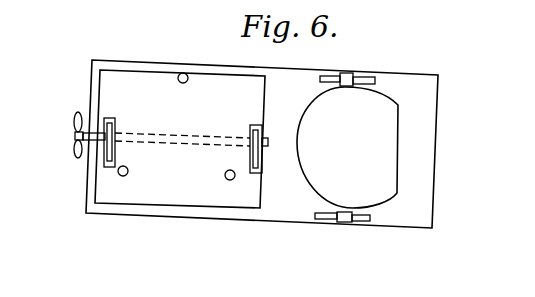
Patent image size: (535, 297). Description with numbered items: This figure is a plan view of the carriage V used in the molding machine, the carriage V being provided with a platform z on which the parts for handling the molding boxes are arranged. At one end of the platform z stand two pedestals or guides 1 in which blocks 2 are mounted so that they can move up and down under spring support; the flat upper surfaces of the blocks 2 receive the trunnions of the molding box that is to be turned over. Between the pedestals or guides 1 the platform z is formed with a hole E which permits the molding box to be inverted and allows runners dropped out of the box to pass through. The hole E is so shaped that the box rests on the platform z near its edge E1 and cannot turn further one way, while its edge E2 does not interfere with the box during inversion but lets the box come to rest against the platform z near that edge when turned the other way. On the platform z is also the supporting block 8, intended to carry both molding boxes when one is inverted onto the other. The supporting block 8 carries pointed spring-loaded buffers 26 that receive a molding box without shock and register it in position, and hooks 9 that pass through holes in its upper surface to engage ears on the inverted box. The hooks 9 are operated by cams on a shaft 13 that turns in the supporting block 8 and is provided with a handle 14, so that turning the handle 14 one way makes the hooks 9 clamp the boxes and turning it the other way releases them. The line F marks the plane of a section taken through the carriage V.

The pedestals or guides 1 is at (370, 77).
The blocks 2 is at (345, 75).
The supporting block 8 is at (180, 139).
The hooks 9 is at (115, 130).
The shaft 13 is at (168, 140).
The handle 14 is at (73, 149).
The buffers 26 is at (206, 75).
The line F F is at (97, 222).
The carriage V is at (282, 93).
The platform z is at (273, 199).
The hole E is at (347, 147).
The edge E' of the hole E1 is at (397, 177).
The edge E² of the hole E2 is at (318, 128).